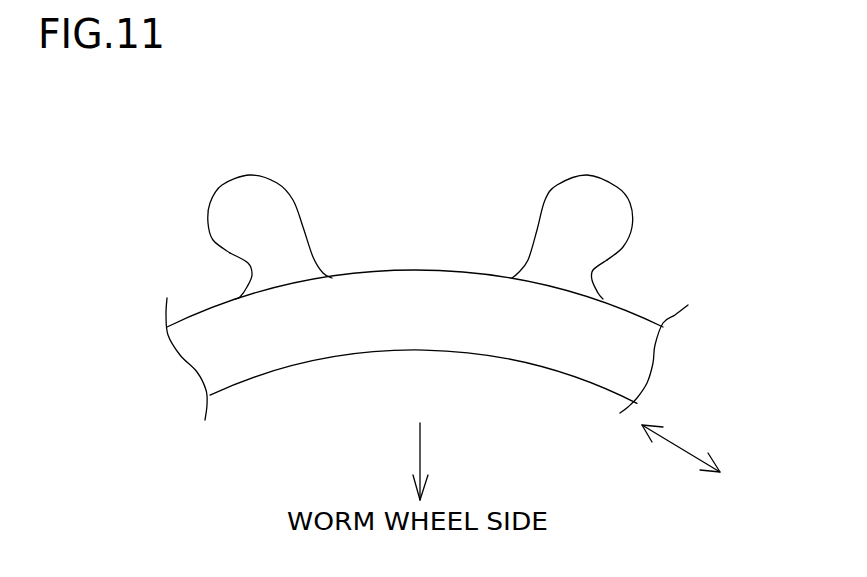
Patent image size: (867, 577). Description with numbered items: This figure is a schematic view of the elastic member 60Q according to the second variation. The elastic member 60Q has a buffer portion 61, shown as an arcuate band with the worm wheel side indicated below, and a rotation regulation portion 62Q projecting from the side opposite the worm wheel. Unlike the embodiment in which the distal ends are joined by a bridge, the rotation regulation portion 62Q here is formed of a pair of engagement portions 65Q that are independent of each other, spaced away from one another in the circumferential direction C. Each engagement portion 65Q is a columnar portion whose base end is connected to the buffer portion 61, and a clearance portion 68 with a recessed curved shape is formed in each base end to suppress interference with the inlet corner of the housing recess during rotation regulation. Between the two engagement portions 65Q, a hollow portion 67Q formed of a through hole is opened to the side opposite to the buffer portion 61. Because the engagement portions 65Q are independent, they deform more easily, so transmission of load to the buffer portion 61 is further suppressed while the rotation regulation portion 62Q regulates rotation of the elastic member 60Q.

The elastic member 60Q is at (426, 268).
The buffer portion 61 is at (258, 362).
The rotation regulation portion 62Q is at (420, 199).
The engagement portions 65Q is at (225, 212).
The hollow portion 67Q is at (422, 247).
The clearance portion 68 is at (243, 273).
The circumferential direction C is at (677, 450).